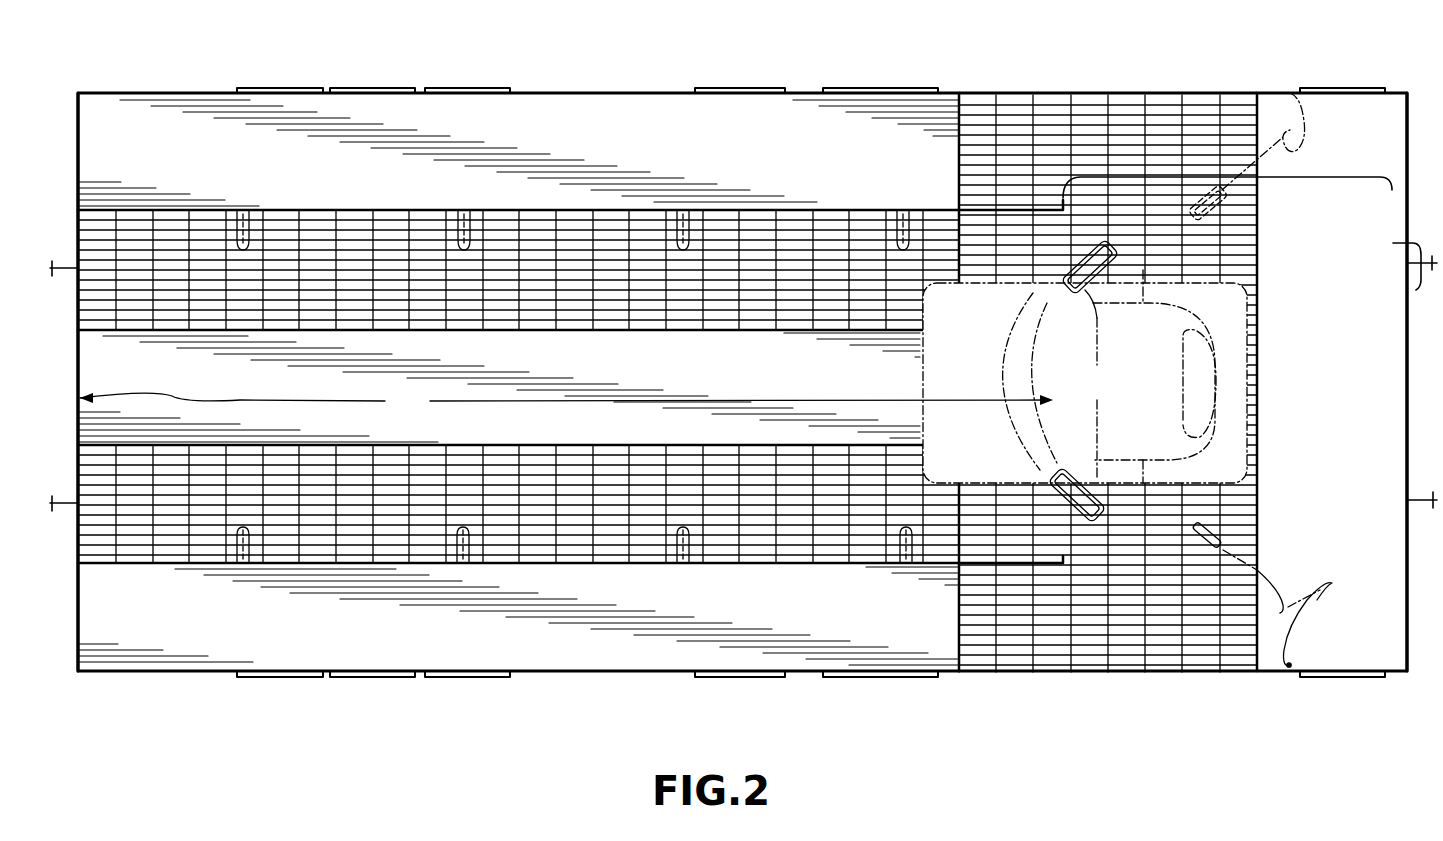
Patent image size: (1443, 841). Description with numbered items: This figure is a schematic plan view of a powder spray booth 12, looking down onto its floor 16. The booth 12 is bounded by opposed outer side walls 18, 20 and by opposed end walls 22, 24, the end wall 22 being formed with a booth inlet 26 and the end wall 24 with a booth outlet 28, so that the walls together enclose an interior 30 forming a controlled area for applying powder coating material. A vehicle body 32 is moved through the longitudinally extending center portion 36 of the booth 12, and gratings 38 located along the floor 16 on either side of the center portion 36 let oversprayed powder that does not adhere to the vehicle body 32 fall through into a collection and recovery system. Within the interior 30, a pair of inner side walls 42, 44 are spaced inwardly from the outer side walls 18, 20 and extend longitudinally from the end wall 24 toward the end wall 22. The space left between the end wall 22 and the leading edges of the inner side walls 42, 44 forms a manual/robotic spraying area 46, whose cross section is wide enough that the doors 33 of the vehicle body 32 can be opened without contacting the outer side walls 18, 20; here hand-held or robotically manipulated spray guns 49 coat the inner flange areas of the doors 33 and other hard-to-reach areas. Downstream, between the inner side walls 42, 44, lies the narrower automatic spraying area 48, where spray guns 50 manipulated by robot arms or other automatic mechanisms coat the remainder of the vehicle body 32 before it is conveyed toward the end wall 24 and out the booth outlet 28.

The spray booth 12 is at (878, 722).
The floor 16 is at (648, 128).
The outer side wall 18 is at (572, 93).
The outer side wall 20 is at (585, 674).
The end wall 22 is at (1407, 112).
The end wall 24 is at (78, 127).
The booth inlet 26 is at (1396, 372).
The booth outlet 28 is at (65, 320).
The interior 30 is at (1153, 128).
The vehicle body 32 is at (1133, 381).
The doors 33 is at (1152, 381).
The center portion 36 is at (1265, 405).
The gratings 38 is at (667, 377).
The inner side wall 42 is at (856, 211).
The inner side wall 44 is at (717, 563).
The manual/robotic spraying area 46 is at (1200, 173).
The automatic spraying area 48 is at (566, 408).
The spray guns 49 is at (1210, 213).
The spray guns 50 is at (480, 190).